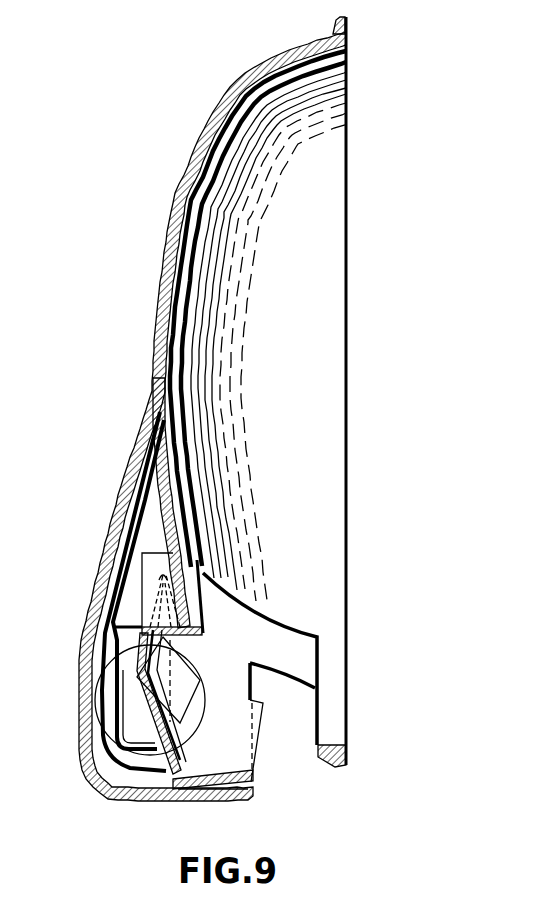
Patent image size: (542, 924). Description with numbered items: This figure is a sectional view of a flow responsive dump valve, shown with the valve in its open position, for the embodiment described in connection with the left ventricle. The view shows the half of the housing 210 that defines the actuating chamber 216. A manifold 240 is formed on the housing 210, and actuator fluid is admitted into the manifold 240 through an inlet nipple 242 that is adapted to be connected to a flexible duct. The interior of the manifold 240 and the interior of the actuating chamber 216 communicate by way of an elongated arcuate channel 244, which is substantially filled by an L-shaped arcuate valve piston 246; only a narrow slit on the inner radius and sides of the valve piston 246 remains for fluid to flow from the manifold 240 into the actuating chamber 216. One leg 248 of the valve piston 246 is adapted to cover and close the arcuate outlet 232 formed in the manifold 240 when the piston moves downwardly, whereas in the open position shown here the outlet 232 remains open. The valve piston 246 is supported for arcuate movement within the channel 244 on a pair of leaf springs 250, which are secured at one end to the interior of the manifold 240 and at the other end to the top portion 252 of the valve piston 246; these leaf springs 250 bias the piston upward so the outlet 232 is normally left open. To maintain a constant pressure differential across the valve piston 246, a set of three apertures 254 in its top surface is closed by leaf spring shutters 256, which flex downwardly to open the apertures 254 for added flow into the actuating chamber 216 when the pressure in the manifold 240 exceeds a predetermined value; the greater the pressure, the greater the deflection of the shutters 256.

The housing 210 is at (186, 183).
The actuating chamber 216 is at (334, 297).
The arcuate outlet 232 is at (317, 733).
The manifold 240 is at (84, 679).
The inlet nipple 242 is at (96, 710).
The elongated arcuate channel 244 is at (213, 785).
The L-shaped arcuate valve piston 246 is at (232, 723).
The leg of piston 248 is at (186, 802).
The leaf springs 250 is at (165, 722).
The top portion of valve piston 252 is at (106, 693).
The apertures 254 is at (170, 762).
The leaf spring shutters 256 is at (186, 688).